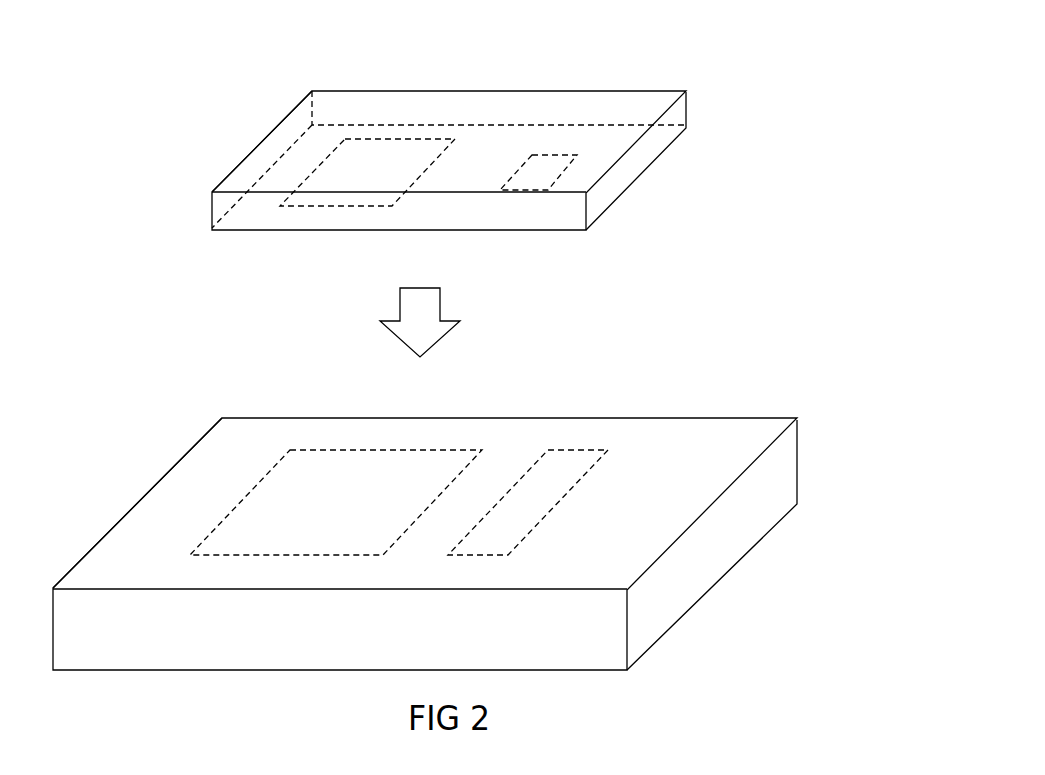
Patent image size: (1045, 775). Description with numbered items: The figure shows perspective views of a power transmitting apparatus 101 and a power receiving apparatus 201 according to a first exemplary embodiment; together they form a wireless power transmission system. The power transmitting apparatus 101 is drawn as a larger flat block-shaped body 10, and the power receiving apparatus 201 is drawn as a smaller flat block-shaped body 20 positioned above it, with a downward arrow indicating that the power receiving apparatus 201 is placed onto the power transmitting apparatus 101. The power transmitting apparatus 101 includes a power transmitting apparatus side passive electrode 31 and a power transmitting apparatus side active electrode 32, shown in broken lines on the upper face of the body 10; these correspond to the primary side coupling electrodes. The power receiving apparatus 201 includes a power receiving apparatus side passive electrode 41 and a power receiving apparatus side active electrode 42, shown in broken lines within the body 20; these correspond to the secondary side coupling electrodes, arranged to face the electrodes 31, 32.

The first substrate 10 is at (797, 420).
The second substrate 20 is at (686, 92).
The power transmitting apparatus side passive electrode 31 is at (313, 480).
The power transmitting apparatus side active electrode 32 is at (570, 468).
The power receiving apparatus side passive electrode 41 is at (323, 207).
The power receiving apparatus side active electrode 42 is at (540, 182).
The power transmitting apparatus 101 is at (178, 408).
The power receiving apparatus 201 is at (274, 76).